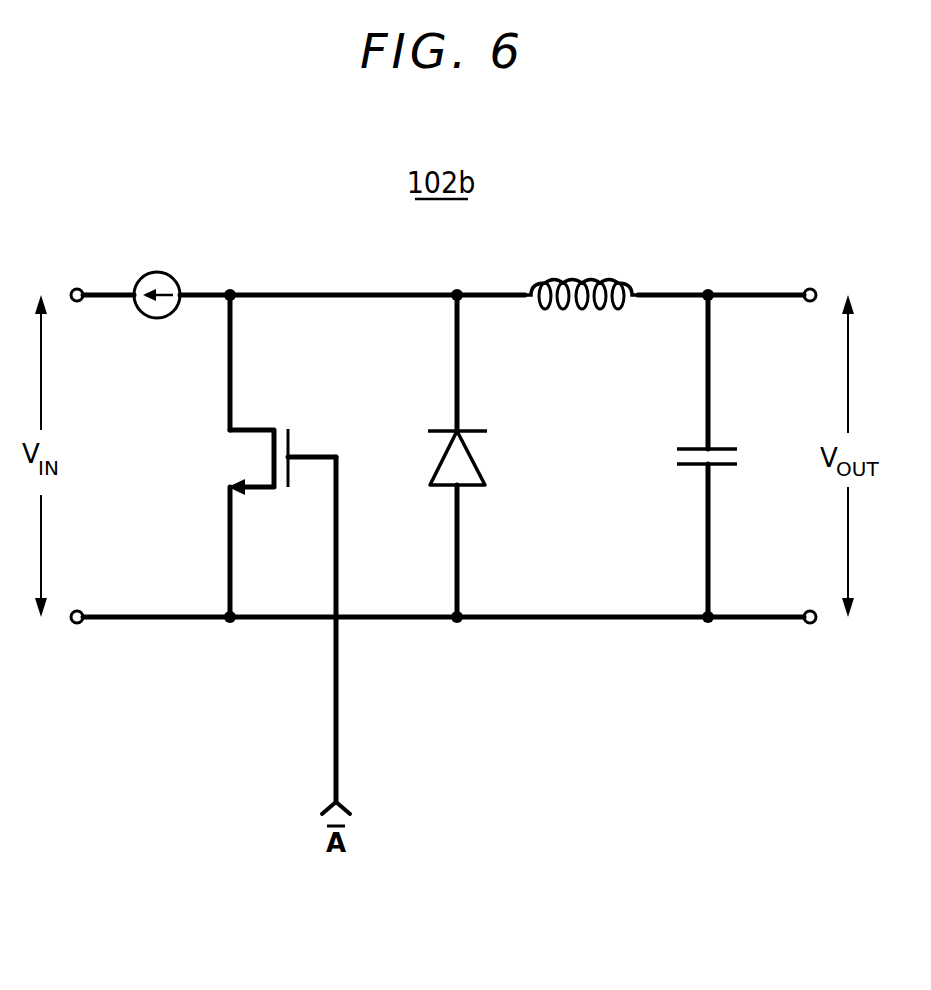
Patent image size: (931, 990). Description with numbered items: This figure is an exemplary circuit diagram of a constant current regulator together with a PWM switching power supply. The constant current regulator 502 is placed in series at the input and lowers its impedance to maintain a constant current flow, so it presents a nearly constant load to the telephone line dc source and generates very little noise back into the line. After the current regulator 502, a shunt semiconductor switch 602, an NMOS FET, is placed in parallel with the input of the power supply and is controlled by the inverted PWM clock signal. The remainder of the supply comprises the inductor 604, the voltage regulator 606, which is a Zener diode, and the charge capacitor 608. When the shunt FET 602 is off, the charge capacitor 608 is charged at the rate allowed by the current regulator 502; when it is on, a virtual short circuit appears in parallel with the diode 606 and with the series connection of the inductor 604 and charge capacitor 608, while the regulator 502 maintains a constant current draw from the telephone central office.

The constant current regulator 502 is at (157, 272).
The semiconductor switch 602 is at (251, 430).
The inductor 604 is at (591, 282).
The voltage regulator 606 is at (472, 461).
The charge capacitor 608 is at (725, 449).